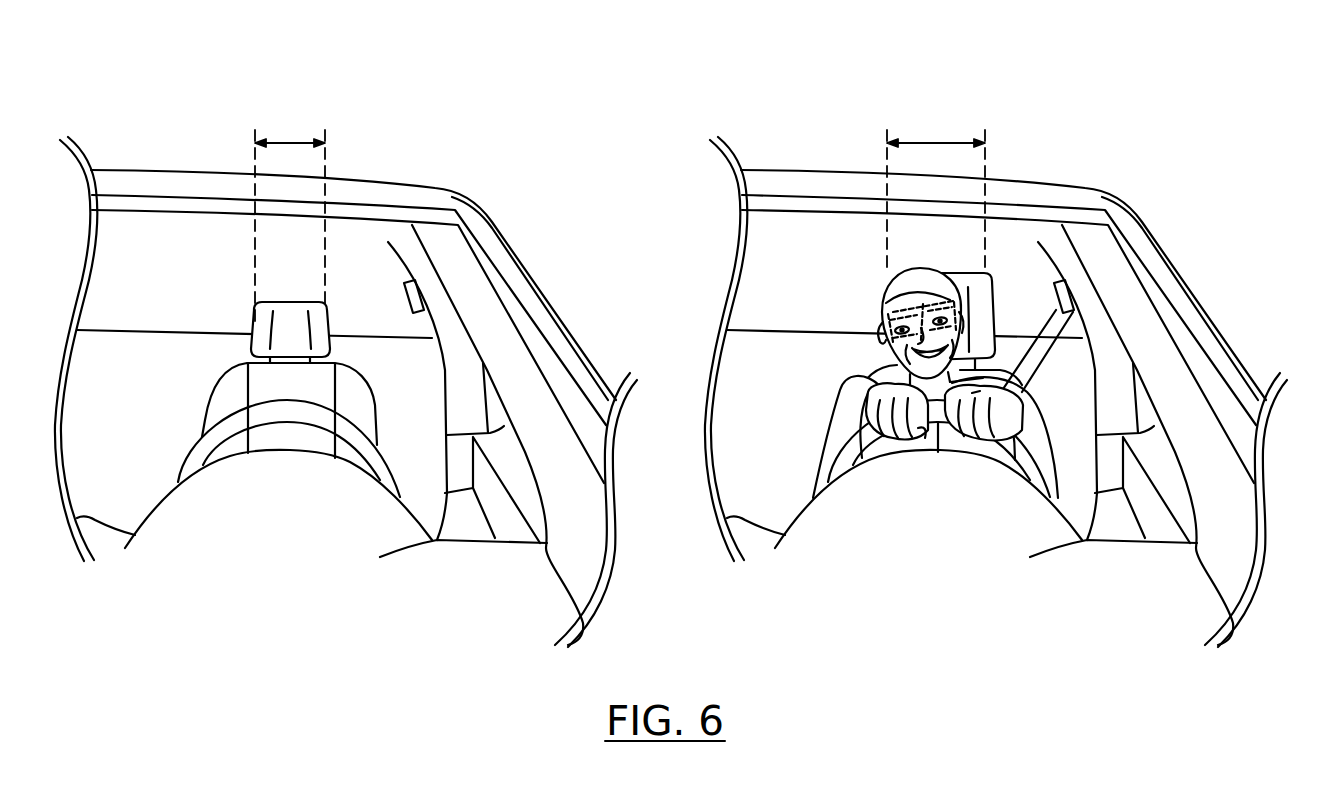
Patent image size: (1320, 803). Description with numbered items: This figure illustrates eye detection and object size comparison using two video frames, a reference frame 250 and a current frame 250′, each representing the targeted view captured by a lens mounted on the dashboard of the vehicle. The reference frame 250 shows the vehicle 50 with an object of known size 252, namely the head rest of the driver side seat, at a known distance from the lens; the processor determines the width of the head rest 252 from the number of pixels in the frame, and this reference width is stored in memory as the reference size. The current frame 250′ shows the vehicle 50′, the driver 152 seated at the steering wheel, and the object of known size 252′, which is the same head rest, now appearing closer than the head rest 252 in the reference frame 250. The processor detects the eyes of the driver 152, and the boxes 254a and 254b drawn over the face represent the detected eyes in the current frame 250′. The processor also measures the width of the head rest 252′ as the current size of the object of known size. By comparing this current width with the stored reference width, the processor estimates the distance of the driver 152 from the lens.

The video frame 250 is at (203, 75).
The vehicle 50 is at (165, 168).
The object of known size 252 is at (253, 322).
The video frame 250′ is at (833, 75).
The vehicle 50′ is at (820, 168).
The object of known size 252′ is at (993, 295).
The driver 152 is at (878, 300).
The box 254a is at (885, 343).
The box 254b is at (933, 300).